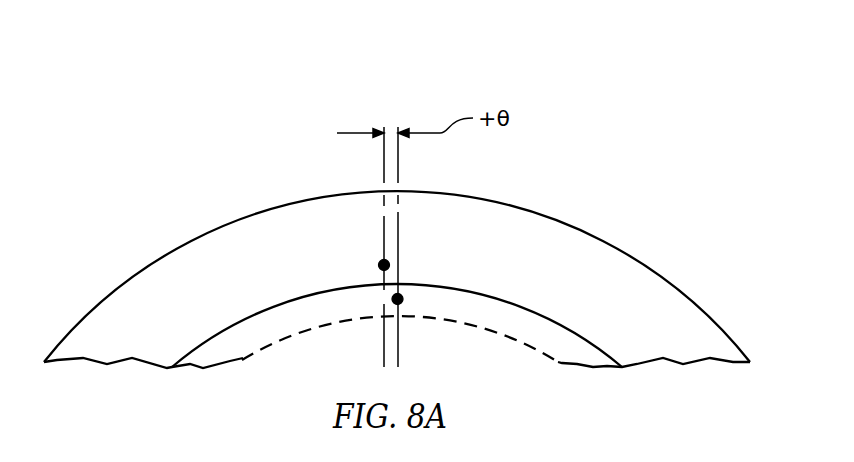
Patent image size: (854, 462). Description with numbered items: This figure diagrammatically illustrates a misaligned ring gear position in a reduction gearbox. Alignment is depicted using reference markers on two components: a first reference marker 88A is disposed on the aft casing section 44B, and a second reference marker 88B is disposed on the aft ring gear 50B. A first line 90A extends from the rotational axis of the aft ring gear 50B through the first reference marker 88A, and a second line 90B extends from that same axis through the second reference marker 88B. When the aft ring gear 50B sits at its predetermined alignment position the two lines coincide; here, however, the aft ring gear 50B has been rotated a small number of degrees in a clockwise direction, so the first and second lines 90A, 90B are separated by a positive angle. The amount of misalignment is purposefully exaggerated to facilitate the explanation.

The aft casing section 44B is at (667, 326).
The aft ring gear 50B is at (583, 352).
The first reference marker 88A is at (382, 263).
The second reference marker 88B is at (400, 299).
The first line 90A is at (382, 171).
The second line 90B is at (400, 163).